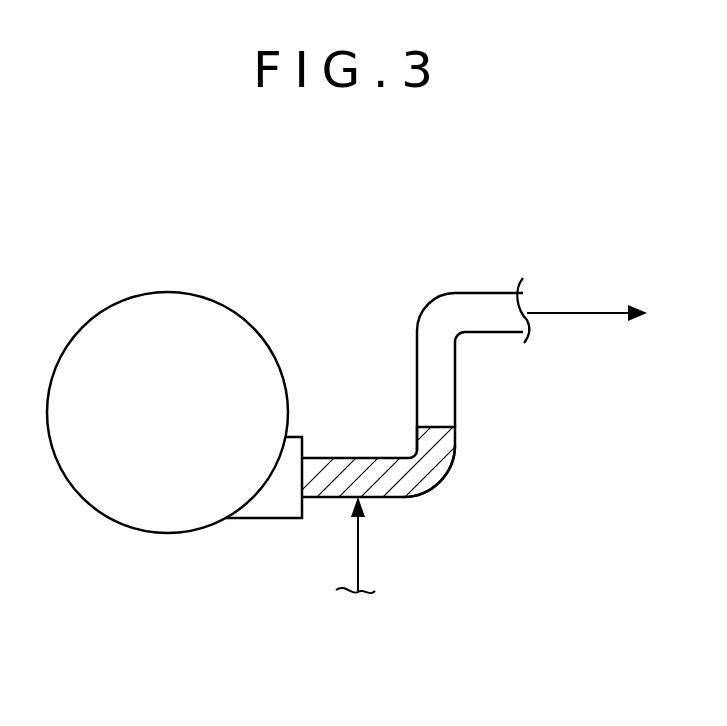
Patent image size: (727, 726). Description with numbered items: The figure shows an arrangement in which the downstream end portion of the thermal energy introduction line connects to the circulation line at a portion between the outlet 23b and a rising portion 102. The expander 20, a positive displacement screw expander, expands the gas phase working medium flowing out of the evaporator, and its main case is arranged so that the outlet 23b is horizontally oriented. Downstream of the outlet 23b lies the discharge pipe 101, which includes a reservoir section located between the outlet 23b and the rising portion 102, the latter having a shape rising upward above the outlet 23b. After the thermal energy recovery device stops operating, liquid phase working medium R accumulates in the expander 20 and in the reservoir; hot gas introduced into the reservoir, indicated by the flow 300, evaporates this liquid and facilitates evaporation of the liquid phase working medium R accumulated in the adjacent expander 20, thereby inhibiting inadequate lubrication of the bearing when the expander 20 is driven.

The expander 20 is at (157, 293).
The outlet 23b is at (303, 480).
The discharge pipe 101 is at (362, 456).
The rising portion 102 is at (457, 379).
The liquid phase working medium R is at (440, 448).
The air flow 300 is at (360, 541).